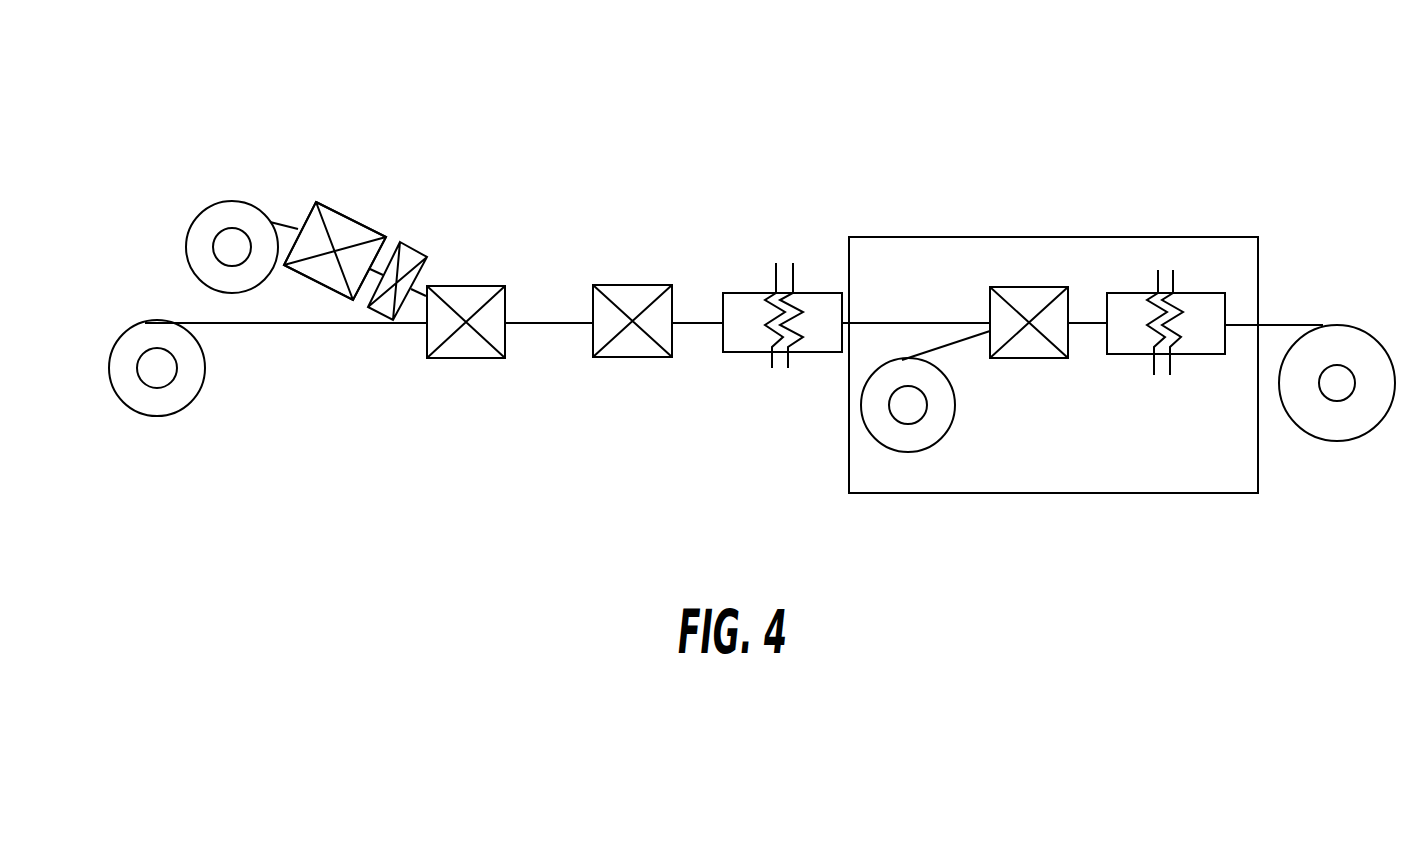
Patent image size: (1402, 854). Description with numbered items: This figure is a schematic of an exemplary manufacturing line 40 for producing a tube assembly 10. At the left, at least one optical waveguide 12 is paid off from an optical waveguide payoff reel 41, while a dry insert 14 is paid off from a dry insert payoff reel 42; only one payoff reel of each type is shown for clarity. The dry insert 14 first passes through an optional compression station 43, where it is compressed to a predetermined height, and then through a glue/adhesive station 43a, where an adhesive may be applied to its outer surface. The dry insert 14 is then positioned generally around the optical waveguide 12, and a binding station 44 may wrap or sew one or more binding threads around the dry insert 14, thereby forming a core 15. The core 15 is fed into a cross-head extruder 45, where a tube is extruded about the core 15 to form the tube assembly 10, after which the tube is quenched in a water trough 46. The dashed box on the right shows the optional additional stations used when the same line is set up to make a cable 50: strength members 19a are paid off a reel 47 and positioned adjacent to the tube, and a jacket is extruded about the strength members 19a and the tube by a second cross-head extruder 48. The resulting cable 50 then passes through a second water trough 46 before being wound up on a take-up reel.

The tube assembly 10 is at (695, 323).
The optical waveguide 12 is at (254, 324).
The dry insert 14 is at (293, 227).
The core 15 is at (545, 324).
The strength members 19a is at (953, 345).
The manufacturing line 40 is at (1338, 443).
The optical waveguide payoff reel 41 is at (158, 388).
The dry insert payoff reel 42 is at (207, 207).
The compression station 43 is at (357, 210).
The glue/adhesive station 43a is at (413, 247).
The binding station 44 is at (462, 285).
The cross-head extruder 45 is at (635, 285).
The water trough 46 is at (738, 352).
The reel 47 is at (937, 438).
The cross-head extruder 48 is at (1010, 287).
The cable 50 is at (1085, 327).